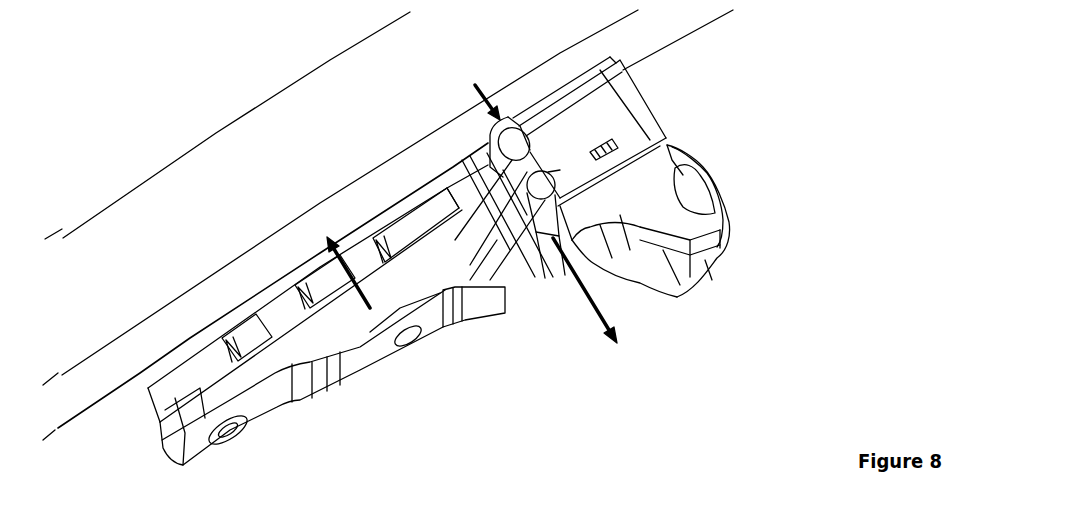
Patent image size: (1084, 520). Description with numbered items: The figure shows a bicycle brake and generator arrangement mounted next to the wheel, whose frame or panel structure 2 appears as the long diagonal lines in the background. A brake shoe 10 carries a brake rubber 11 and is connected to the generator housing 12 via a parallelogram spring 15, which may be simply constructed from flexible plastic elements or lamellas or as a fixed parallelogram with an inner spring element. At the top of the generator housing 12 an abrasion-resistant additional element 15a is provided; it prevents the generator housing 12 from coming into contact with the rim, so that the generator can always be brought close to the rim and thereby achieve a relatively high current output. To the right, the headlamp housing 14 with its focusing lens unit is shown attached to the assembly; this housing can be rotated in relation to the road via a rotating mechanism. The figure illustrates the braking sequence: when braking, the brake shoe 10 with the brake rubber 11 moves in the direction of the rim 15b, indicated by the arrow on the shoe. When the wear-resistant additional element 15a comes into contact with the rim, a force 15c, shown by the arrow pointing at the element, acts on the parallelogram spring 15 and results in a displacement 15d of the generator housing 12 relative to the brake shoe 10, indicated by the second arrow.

The vehicle door 2 is at (287, 107).
The brake shoe 10 is at (277, 368).
The brake rubber 11 is at (332, 280).
The generator housing 12 is at (630, 110).
The headlamp housing 14 is at (685, 298).
The parallelogram spring 15 is at (533, 228).
The abrasion-resistant additional element 15a is at (488, 145).
The direction of the rim 15b is at (417, 343).
The force 15c is at (482, 88).
The displacement 15d is at (622, 337).